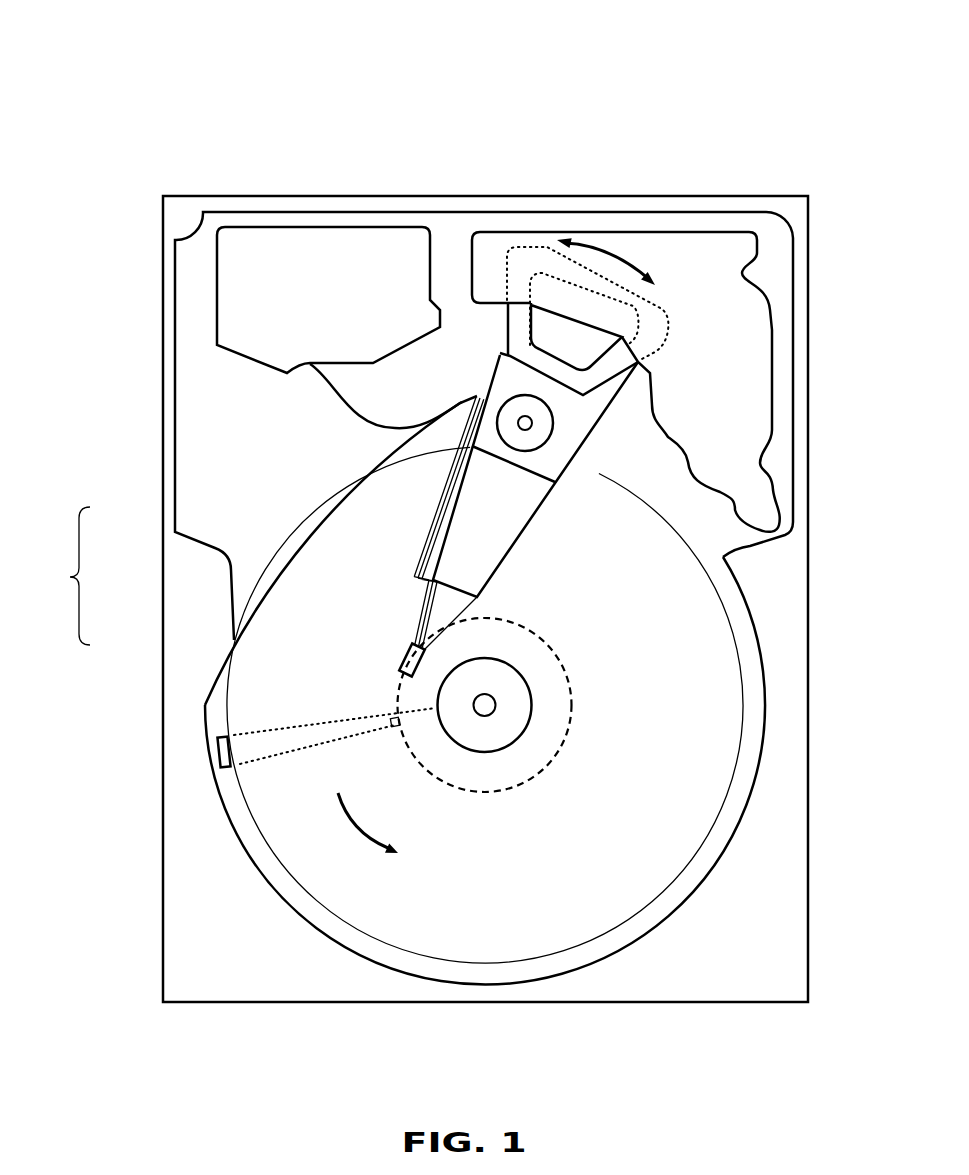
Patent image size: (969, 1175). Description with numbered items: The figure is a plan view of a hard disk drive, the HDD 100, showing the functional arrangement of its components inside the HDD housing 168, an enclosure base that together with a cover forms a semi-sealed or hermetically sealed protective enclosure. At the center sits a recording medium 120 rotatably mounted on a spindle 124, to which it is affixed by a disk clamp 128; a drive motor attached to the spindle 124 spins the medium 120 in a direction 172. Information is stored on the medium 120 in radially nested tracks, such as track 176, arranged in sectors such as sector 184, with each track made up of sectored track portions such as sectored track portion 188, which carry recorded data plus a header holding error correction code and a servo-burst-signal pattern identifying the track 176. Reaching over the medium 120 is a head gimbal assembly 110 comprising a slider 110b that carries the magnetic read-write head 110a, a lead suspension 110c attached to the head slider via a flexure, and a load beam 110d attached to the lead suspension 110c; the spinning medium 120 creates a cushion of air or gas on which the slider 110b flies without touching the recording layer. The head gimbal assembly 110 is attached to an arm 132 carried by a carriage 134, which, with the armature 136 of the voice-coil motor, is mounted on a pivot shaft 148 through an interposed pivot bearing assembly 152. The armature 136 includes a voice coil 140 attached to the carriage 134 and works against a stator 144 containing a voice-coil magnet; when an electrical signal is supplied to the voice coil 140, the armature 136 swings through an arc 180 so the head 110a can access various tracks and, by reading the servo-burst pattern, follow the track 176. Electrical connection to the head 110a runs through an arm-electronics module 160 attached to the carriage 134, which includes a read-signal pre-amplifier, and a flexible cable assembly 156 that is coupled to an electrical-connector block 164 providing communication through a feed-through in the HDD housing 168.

The hard disk drive 100 is at (86, 71).
The head gimbal assembly 110 is at (58, 576).
The magnetic read-write head 110a is at (400, 676).
The slider 110b is at (417, 643).
The lead suspension 110c is at (430, 607).
The load beam 110d is at (413, 579).
The recording medium 120 is at (668, 655).
The spindle 124 is at (488, 704).
The disk clamp 128 is at (510, 722).
The arm 132 is at (477, 538).
The carriage 134 is at (543, 458).
The armature 136 is at (503, 345).
The voice coil 140 is at (518, 315).
The stator 144 is at (735, 325).
The pivot shaft 148 is at (531, 423).
The pivot bearing assembly 152 is at (545, 455).
The flexible cable assembly 156 is at (340, 400).
The arm-electronics module 160 is at (478, 393).
The electrical-connector block 164 is at (240, 298).
The HDD housing 168 is at (788, 214).
The direction 172 is at (377, 832).
The track 176 is at (562, 665).
The arc 180 is at (605, 252).
The sector 184 is at (221, 755).
The sectored track portion 188 is at (392, 718).